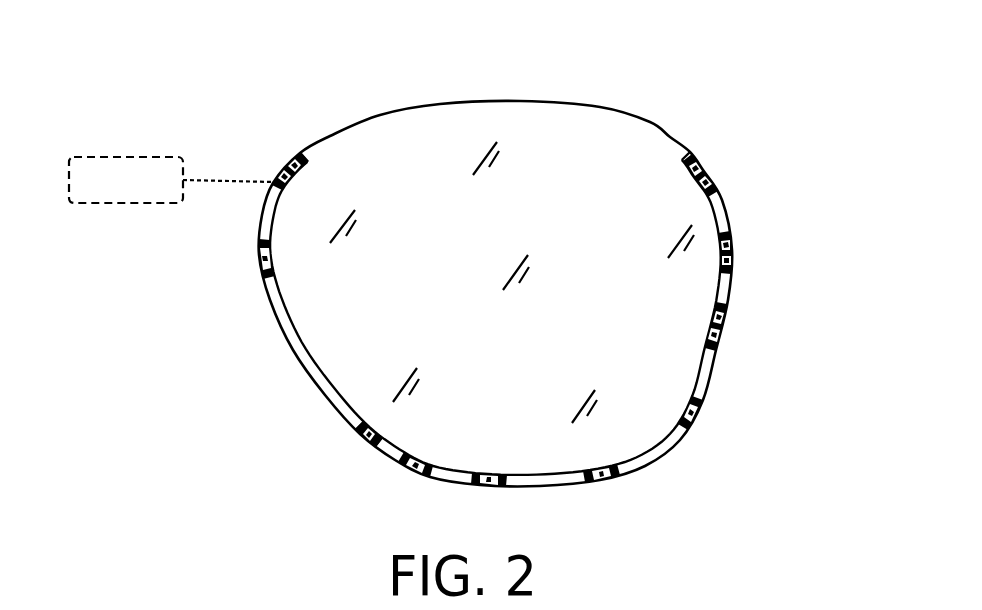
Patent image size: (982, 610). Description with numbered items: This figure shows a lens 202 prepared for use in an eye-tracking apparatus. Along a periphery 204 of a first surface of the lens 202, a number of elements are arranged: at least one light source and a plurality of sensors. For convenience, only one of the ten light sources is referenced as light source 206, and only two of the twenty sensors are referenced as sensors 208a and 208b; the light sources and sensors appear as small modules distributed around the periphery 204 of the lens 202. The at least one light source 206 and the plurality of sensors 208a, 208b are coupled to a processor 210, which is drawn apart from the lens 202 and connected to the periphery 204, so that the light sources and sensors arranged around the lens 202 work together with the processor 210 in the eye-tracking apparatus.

The lens 202 is at (558, 183).
The periphery 204 is at (670, 137).
The light source 206 is at (360, 440).
The sensor 208a is at (360, 432).
The sensor 208b is at (375, 446).
The processor 210 is at (138, 167).